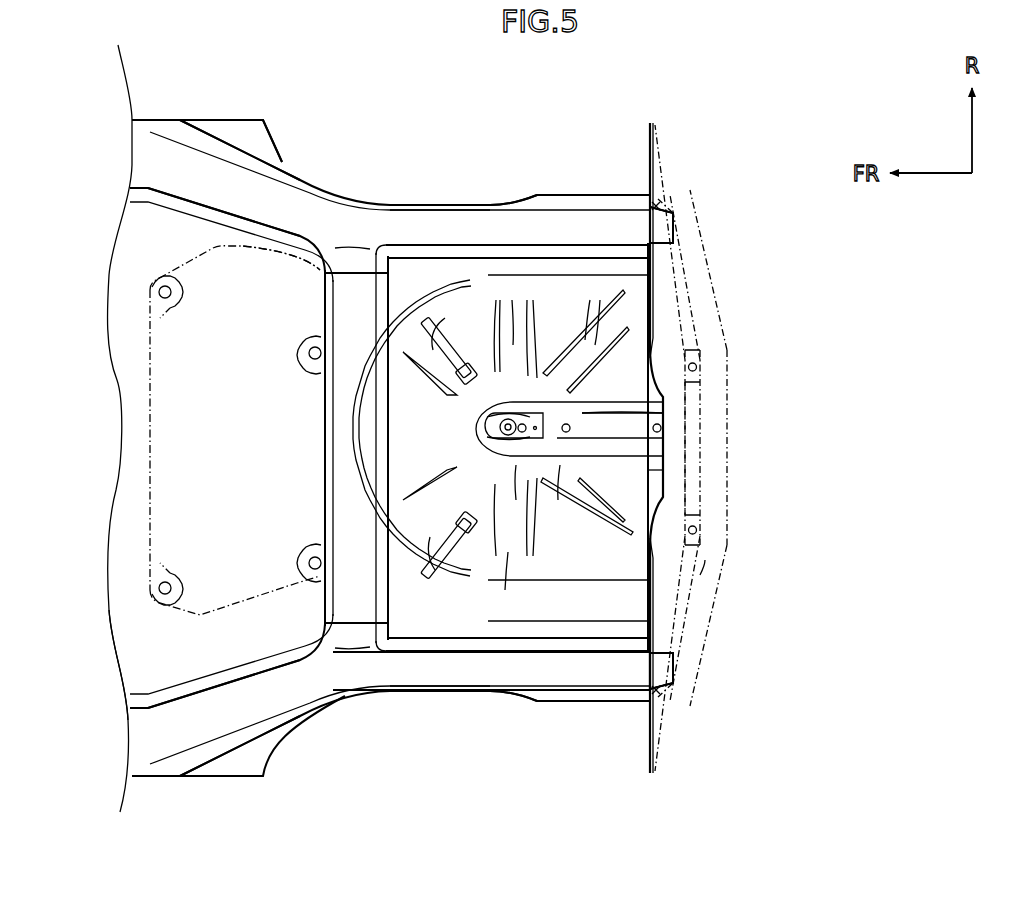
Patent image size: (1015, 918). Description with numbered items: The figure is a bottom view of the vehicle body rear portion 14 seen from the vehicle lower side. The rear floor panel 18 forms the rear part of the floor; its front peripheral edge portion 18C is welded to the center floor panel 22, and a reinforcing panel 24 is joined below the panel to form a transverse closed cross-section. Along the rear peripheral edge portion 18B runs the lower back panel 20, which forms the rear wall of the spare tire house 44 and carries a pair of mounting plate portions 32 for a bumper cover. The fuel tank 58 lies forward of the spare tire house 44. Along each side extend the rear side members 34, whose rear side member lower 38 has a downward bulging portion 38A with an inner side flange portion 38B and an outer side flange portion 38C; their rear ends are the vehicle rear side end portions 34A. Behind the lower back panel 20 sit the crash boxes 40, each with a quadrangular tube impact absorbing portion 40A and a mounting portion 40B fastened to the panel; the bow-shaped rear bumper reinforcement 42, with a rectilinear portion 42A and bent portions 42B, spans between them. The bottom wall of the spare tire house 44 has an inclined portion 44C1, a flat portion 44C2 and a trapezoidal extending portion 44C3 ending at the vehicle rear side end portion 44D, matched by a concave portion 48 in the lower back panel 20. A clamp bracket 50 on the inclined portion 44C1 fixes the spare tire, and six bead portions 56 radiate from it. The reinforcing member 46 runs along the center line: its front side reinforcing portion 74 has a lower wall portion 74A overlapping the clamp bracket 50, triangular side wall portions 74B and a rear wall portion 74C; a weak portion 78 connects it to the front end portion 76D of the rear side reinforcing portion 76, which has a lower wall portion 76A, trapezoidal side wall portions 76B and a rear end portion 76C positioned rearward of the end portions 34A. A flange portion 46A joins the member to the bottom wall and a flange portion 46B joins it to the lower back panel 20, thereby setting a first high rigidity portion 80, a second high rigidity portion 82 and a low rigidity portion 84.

The vehicle body rear portion 14 is at (652, 92).
The rear floor panel 18 is at (548, 157).
The peripheral edge portion 18B is at (688, 600).
The peripheral edge portion 18C is at (314, 263).
The lower back panel 20 is at (683, 515).
The center floor panel 22 is at (130, 641).
The reinforcing panel 24 is at (330, 304).
The mounting plate portions 32 is at (700, 366).
The rear side members 34 is at (441, 188).
The vehicle rear side end portions 34A is at (645, 196).
The rear side member lower 38 is at (388, 198).
The bulging portion 38A is at (338, 188).
The inner side flange portion 38B is at (284, 162).
The outer side flange portion 38C is at (168, 198).
The crash boxes 40 is at (673, 221).
The impact absorbing portion 40A is at (683, 237).
The mounting portion 40B is at (657, 207).
The rear bumper reinforcement 42 is at (722, 292).
The rectilinear portion 42A is at (715, 453).
The bent portions 42B is at (703, 263).
The spare tire house 44 is at (352, 478).
The inclined portion 44C1 is at (491, 668).
The flat portion 44C2 is at (491, 675).
The extending portion 44C3 is at (658, 466).
The vehicle rear side end portion 44D is at (667, 480).
The reinforcing member 46 is at (518, 395).
The flange portion 46A is at (531, 332).
The flange portion 46B is at (663, 403).
The concave portion 48 is at (657, 372).
The clamp bracket 50 is at (477, 430).
The bead portions 56 is at (513, 317).
The fuel tank 58 is at (160, 393).
The front side reinforcing portion 74 is at (512, 410).
The lower wall portion 74A is at (518, 437).
The side wall portions 74B is at (478, 411).
The rear wall portion 74C is at (541, 368).
The rear side reinforcing portion 76 is at (638, 442).
The lower wall portion 76A is at (557, 436).
The side wall portions 76B is at (607, 398).
The end portion 76C is at (663, 414).
The end portion 76D is at (593, 340).
The weak portion 78 is at (538, 562).
The first high rigidity portion 80 is at (516, 470).
The second high rigidity portion 82 is at (655, 421).
The low rigidity portion 84 is at (565, 445).